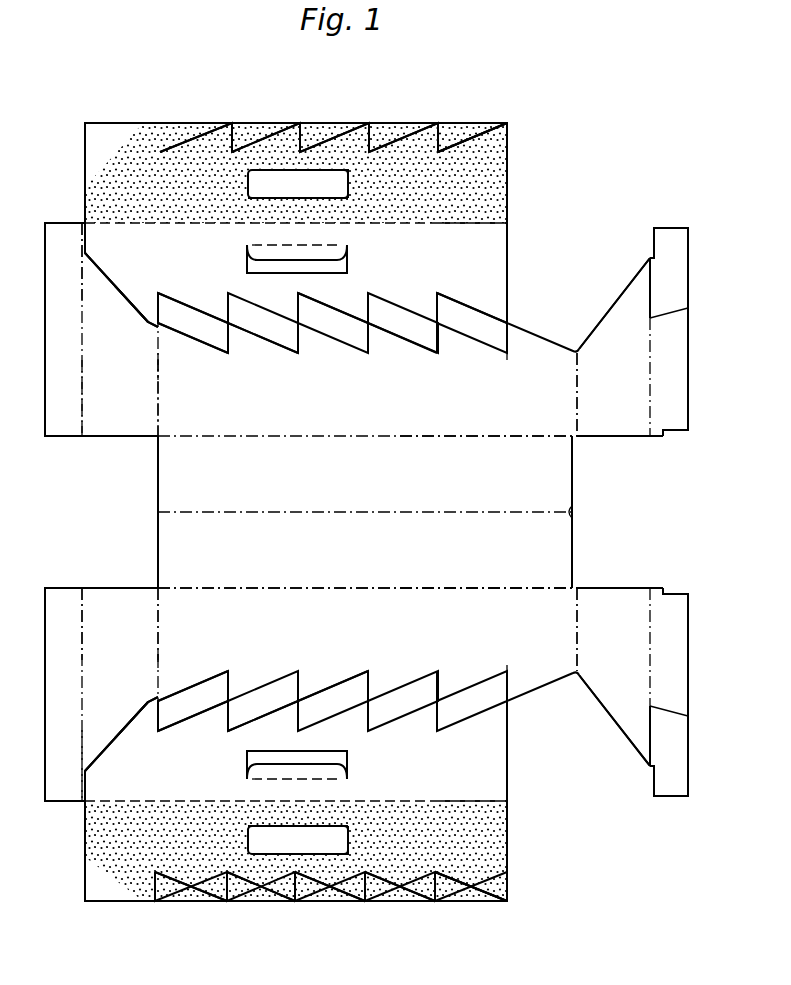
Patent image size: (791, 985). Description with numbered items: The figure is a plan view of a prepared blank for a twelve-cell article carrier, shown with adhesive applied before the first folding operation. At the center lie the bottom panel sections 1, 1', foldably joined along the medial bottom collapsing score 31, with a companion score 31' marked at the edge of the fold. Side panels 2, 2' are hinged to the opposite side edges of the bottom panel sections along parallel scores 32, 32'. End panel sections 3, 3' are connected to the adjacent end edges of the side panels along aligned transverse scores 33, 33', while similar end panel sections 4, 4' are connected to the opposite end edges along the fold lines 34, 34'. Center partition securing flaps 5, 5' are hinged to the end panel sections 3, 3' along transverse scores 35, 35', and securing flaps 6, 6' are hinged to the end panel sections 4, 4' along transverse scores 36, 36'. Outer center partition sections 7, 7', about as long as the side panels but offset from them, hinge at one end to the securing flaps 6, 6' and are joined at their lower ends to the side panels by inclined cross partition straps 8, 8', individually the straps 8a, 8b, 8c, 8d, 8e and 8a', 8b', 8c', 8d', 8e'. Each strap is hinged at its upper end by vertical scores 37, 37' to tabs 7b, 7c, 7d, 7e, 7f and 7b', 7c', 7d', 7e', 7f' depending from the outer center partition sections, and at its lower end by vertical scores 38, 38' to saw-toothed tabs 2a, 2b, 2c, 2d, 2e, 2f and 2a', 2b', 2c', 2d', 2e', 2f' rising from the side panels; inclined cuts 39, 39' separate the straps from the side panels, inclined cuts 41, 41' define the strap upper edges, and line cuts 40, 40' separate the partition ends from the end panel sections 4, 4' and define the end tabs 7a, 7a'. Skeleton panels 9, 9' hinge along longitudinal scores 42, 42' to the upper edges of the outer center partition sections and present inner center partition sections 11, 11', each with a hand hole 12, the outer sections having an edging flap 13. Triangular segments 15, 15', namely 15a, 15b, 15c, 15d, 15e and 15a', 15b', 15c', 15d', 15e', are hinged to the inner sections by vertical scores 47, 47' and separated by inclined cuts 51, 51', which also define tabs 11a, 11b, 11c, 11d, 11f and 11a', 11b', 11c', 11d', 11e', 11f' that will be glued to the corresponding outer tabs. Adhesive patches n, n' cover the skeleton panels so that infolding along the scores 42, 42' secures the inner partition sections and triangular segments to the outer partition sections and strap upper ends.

The bottom panel section 1 is at (365, 512).
The bottom panel section 1' is at (367, 563).
The side panel 2 is at (367, 394).
The side panel 2' is at (367, 629).
The saw-toothed tab 2a is at (165, 358).
The saw-toothed tab 2b is at (240, 345).
The saw-toothed tab 2c is at (312, 345).
The saw-toothed tab 2d is at (383, 345).
The saw-toothed tab 2e is at (455, 345).
The end tab 2f is at (516, 348).
The saw-toothed tab 2a' is at (172, 667).
The saw-toothed tab 2b' is at (245, 673).
The saw-toothed tab 2c' is at (313, 673).
The saw-toothed tab 2d' is at (383, 673).
The saw-toothed tab 2e' is at (452, 676).
The end tab 2f' is at (518, 674).
The end panel section 3 is at (620, 347).
The end panel section 3' is at (620, 677).
The end panel section 4 is at (133, 364).
The end panel section 4' is at (132, 659).
The center partition securing flap 5 is at (669, 332).
The center partition securing flap 5' is at (669, 692).
The center partition securing flap 6 is at (101, 329).
The center partition securing flap 6' is at (101, 694).
The outer center partition section 7 is at (312, 275).
The outer center partition section 7' is at (314, 749).
The end tab 7a is at (116, 286).
The triangular shaped tab 7b is at (213, 300).
The triangular shaped tab 7c is at (284, 300).
The triangular shaped tab 7d is at (354, 300).
The triangular shaped tab 7e is at (423, 300).
The triangular shaped tab 7f is at (492, 307).
The end tab 7a' is at (122, 736).
The triangular shaped tab 7b' is at (212, 722).
The triangular shaped tab 7c' is at (283, 722).
The triangular shaped tab 7d' is at (353, 722).
The triangular shaped tab 7e' is at (421, 722).
The triangular shaped tab 7f' is at (492, 716).
The cross partition strap 8 is at (380, 323).
The cross partition strap 8' is at (384, 701).
The cross partition strap 8a is at (193, 323).
The cross partition strap 8b is at (263, 323).
The cross partition strap 8c is at (333, 323).
The cross partition strap 8d is at (403, 323).
The cross partition strap 8e is at (472, 323).
The cross partition strap 8a' is at (193, 701).
The cross partition strap 8b' is at (263, 701).
The cross partition strap 8c' is at (333, 701).
The cross partition strap 8d' is at (403, 701).
The cross partition strap 8e' is at (472, 701).
The skeleton panel 9 is at (529, 176).
The skeleton panel 9' is at (531, 830).
The inner center partition section 11 is at (318, 238).
The inner center partition section 11' is at (320, 786).
The end tab 11a is at (114, 115).
The end tab 11a' is at (114, 916).
The tab 11b is at (206, 186).
The tab 11b' is at (200, 840).
The tab 11c is at (298, 171).
The tab 11c' is at (298, 855).
The tab 11d is at (326, 170).
The tab 11d' is at (325, 853).
The tab 11e' is at (408, 839).
The tab 11f is at (500, 137).
The tab 11f' is at (499, 886).
The hand hole 12 is at (261, 198).
The edging flap 13 is at (300, 256).
The triangular segment 15 is at (333, 108).
The triangular segment 15' is at (331, 926).
The triangular segment 15a is at (196, 126).
The triangular segment 15b is at (266, 126).
The triangular segment 15c is at (334, 126).
The triangular segment 15d is at (403, 125).
The triangular segment 15e is at (472, 125).
The triangular segment 15a' is at (191, 898).
The triangular segment 15b' is at (261, 900).
The triangular segment 15c' is at (330, 900).
The triangular segment 15d' is at (400, 900).
The triangular segment 15e' is at (471, 907).
The bottom collapsing score 31 is at (365, 502).
The fold line notch 31' is at (593, 509).
The score 32 is at (488, 452).
The score 32' is at (488, 573).
The transverse score 33 is at (556, 394).
The transverse score 33' is at (556, 629).
The fold line 34 is at (178, 398).
The fold line 34' is at (179, 624).
The transverse score 35 is at (691, 309).
The transverse score 35' is at (689, 697).
The transverse score 36 is at (56, 413).
The transverse score 36' is at (93, 611).
The vertical score 37 is at (296, 289).
The vertical score 37' is at (306, 731).
The vertical score 38 is at (363, 357).
The vertical score 38' is at (376, 664).
The inclined cut 39 is at (297, 358).
The inclined cut 39' is at (263, 667).
The line cut 40 is at (116, 287).
The line cut 40' is at (116, 736).
The inclined cut 41 is at (332, 291).
The inclined cut 41' is at (237, 735).
The longitudinal score 42 is at (494, 231).
The longitudinal score 42' is at (496, 783).
The vertical score 47 is at (299, 115).
The vertical score 47' is at (301, 920).
The inclined cut 51 is at (357, 113).
The inclined cut 51' is at (364, 913).
The adhesive patch n is at (90, 186).
The adhesive patch n' is at (82, 835).